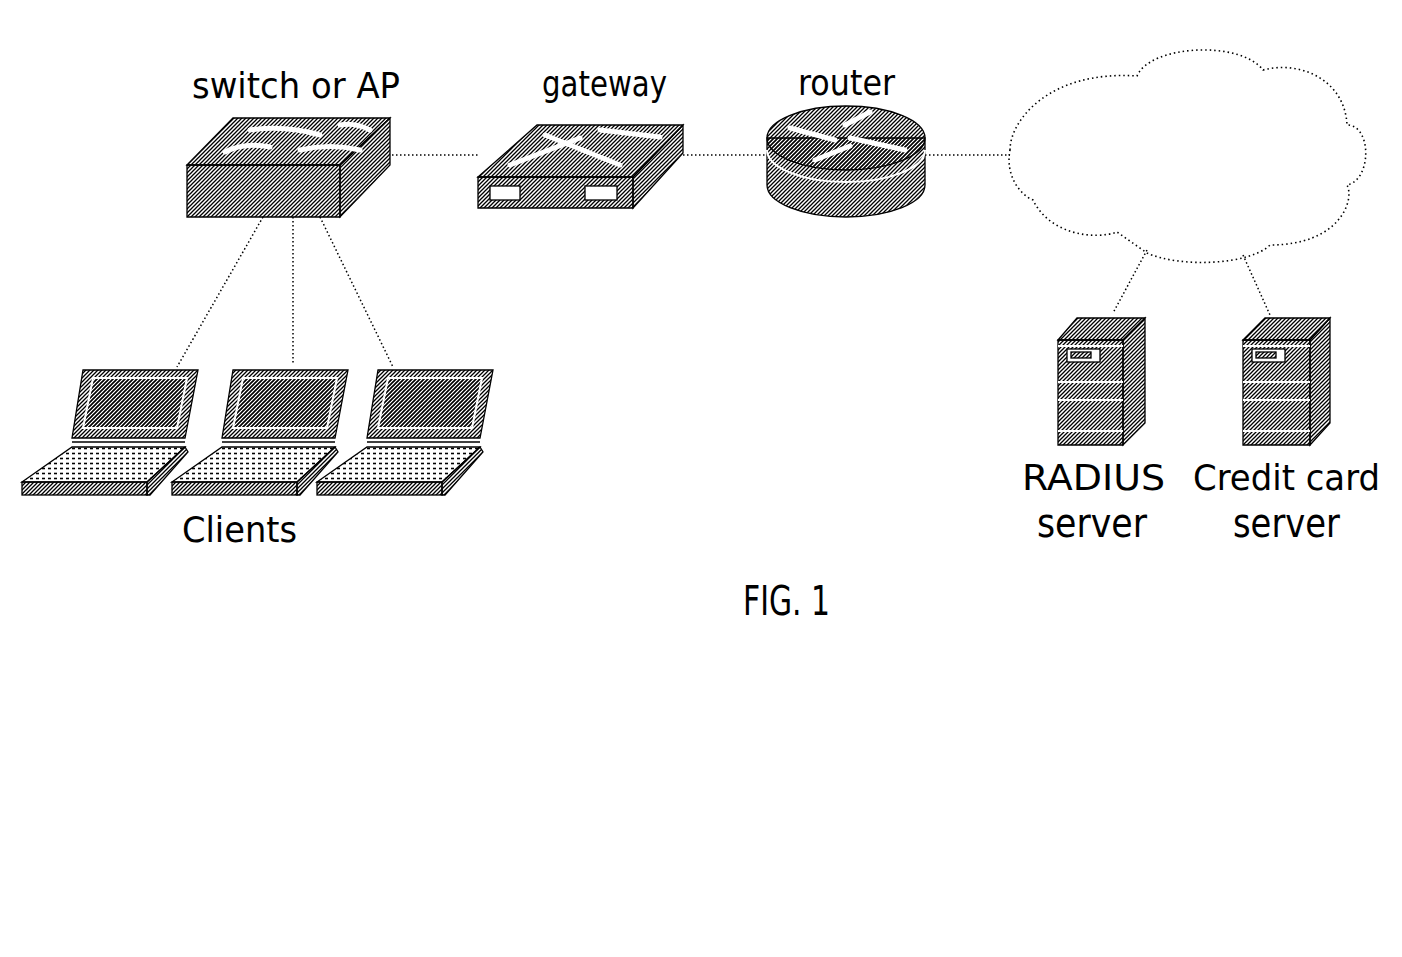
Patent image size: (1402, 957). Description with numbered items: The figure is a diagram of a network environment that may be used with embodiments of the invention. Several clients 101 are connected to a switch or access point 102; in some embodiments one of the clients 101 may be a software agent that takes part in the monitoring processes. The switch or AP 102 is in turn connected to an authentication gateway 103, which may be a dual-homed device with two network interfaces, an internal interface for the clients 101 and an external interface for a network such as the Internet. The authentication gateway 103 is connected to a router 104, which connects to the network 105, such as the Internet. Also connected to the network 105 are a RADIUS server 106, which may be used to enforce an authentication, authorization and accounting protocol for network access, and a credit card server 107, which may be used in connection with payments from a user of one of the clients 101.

The clients 101 is at (482, 470).
The switch or access point (AP) 102 is at (183, 178).
The authentication gateway 103 is at (560, 220).
The router 104 is at (847, 223).
The network 105 is at (1077, 73).
The RADIUS server 106 is at (1055, 380).
The credit card server 107 is at (1297, 313).